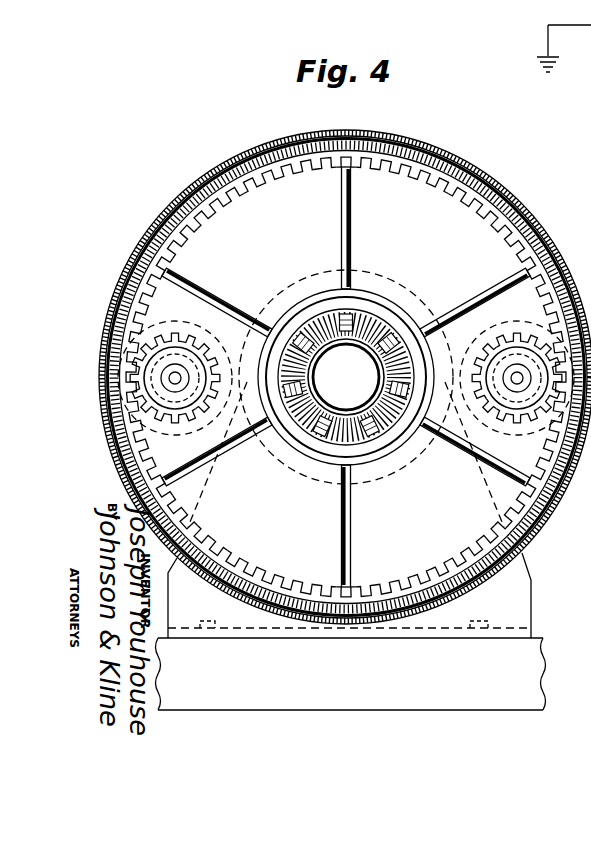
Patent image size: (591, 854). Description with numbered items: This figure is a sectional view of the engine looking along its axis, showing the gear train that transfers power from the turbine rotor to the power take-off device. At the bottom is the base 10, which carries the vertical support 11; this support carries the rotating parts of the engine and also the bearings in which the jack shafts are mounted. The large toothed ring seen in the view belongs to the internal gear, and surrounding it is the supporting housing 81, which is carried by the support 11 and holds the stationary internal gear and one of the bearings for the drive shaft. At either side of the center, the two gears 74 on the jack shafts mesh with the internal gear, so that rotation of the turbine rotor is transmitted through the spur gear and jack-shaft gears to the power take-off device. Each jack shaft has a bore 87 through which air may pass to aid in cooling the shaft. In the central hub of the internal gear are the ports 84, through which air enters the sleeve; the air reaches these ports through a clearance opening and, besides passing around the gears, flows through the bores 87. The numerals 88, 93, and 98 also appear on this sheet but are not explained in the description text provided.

The base 10 is at (527, 667).
The vertical support 11 is at (520, 588).
The gear 74 is at (181, 333).
The supporting housing 81 is at (203, 202).
The port 84 is at (296, 333).
The bore 87 is at (173, 376).
The lead 88 is at (576, 153).
The lead 93 is at (586, 125).
The gear teeth / ground connection 98 is at (228, 201).